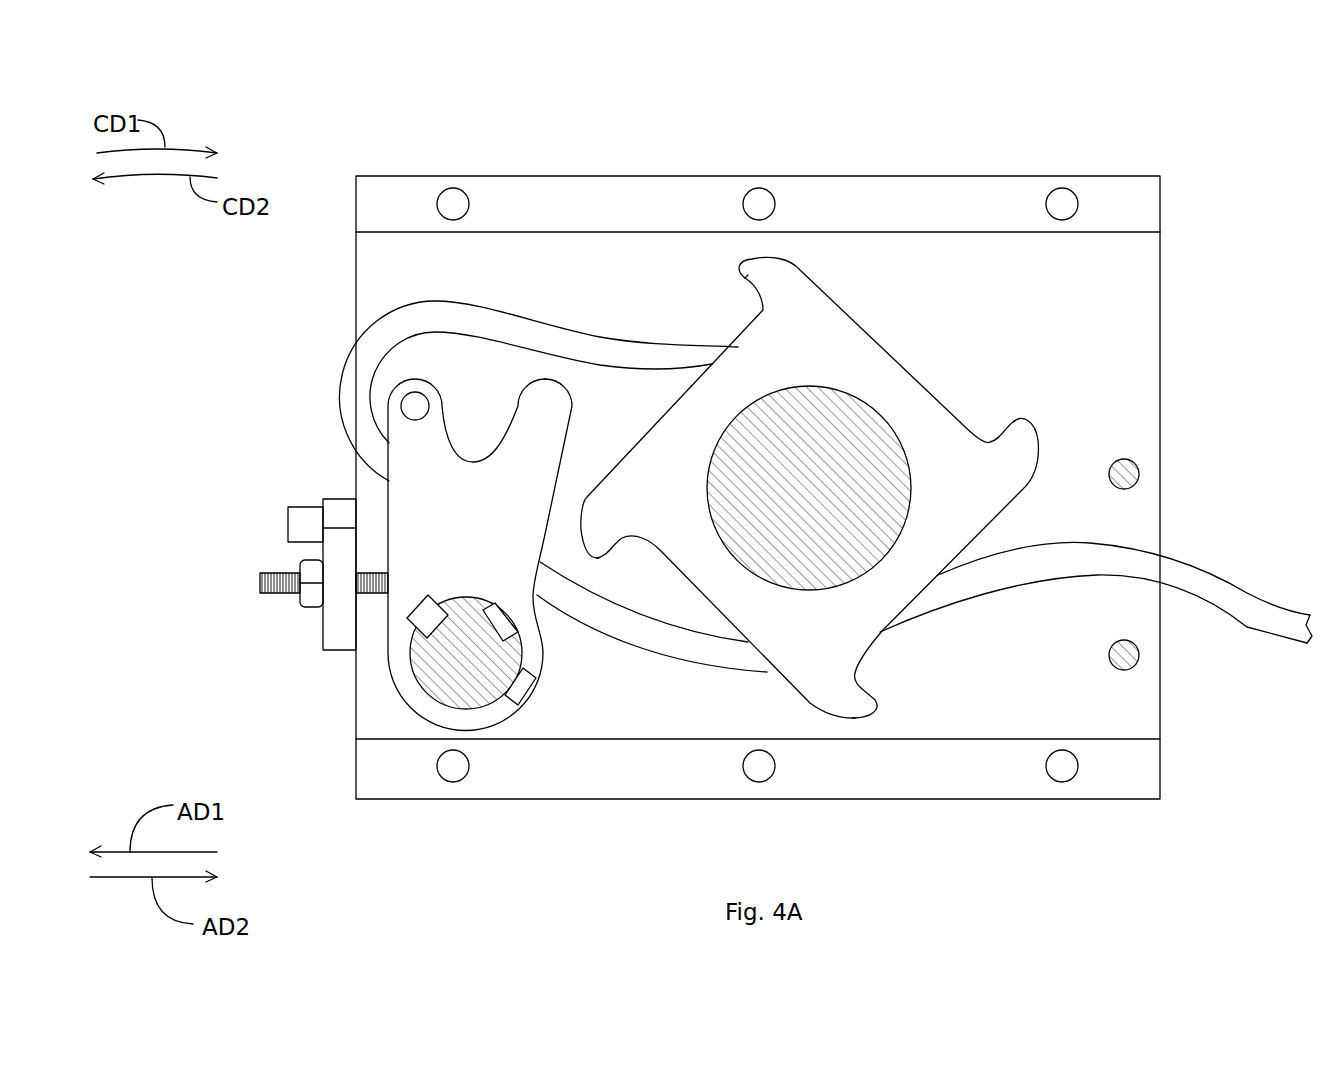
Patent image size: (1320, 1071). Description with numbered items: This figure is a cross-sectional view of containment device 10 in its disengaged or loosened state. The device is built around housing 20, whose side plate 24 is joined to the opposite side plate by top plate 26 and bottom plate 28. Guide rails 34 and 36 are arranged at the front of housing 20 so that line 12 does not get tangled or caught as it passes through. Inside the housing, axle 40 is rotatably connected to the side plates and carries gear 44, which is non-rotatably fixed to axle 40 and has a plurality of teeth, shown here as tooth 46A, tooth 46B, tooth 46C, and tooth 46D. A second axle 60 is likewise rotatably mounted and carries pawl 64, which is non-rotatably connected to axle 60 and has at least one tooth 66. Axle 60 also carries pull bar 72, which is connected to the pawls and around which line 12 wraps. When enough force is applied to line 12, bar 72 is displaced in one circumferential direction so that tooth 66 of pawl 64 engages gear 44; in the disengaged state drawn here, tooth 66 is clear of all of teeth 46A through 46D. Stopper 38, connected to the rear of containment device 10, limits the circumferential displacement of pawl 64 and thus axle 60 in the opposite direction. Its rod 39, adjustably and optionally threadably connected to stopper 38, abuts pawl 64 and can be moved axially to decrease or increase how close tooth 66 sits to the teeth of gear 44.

The containment device 10 is at (275, 63).
The line 12 is at (1268, 613).
The housing 20 is at (1053, 175).
The side plate 24 is at (1127, 312).
The top plate 26 is at (1122, 202).
The bottom plate 28 is at (1142, 770).
The guide rail 34 is at (1127, 653).
The guide rail 36 is at (1127, 474).
The stopper 38 is at (337, 630).
The rod 39 is at (273, 573).
The axle 40 is at (821, 502).
The gear 44 is at (737, 600).
The tooth 46A is at (773, 277).
The tooth 46B is at (600, 537).
The tooth 46C is at (847, 697).
The tooth 46D is at (1013, 443).
The axle 60 is at (478, 683).
The pawl 64 is at (412, 520).
The tooth 66 is at (544, 413).
The pull bar 72 is at (414, 406).